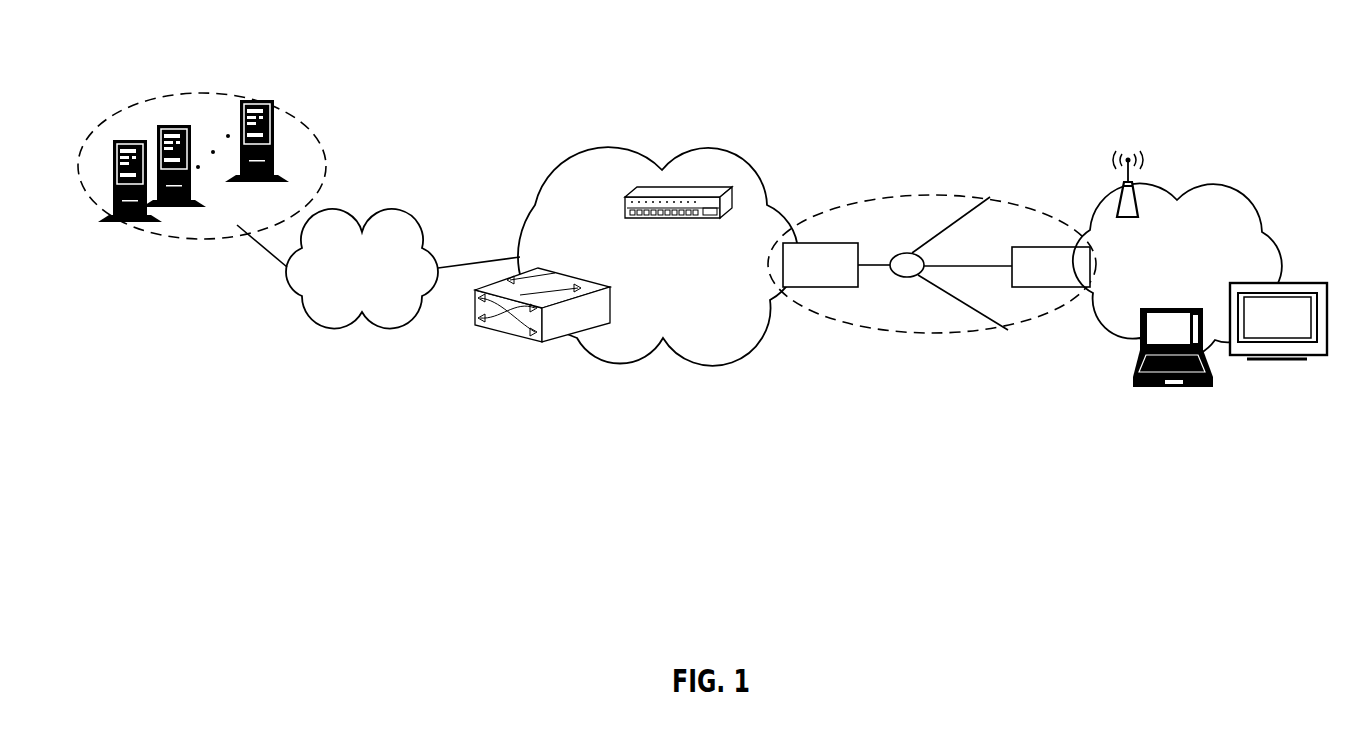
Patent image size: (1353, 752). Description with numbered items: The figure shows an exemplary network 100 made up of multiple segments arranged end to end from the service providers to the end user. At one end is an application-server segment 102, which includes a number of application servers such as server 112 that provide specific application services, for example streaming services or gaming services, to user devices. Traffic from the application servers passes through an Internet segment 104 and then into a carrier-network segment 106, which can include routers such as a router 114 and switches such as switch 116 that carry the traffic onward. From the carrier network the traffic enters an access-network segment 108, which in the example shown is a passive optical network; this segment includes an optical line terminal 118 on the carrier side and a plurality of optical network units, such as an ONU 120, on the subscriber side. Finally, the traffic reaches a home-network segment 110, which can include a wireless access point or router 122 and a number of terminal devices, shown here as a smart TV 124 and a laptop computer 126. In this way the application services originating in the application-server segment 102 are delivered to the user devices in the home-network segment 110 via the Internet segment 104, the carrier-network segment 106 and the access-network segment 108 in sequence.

The network 100 is at (717, 548).
The application-server segment 102 is at (318, 117).
The Internet segment 104 is at (323, 317).
The carrier-network segment 106 is at (705, 153).
The access-network segment 108 is at (920, 333).
The home-network segment 110 is at (1110, 320).
The server 112 is at (170, 125).
The router 114 is at (505, 335).
The switch 116 is at (647, 188).
The optical line terminal (OLT) 118 is at (845, 243).
The ONU 120 is at (1047, 247).
The wireless access point or router 122 is at (1142, 187).
The smart TV 124 is at (1270, 360).
The laptop computer 126 is at (1165, 387).